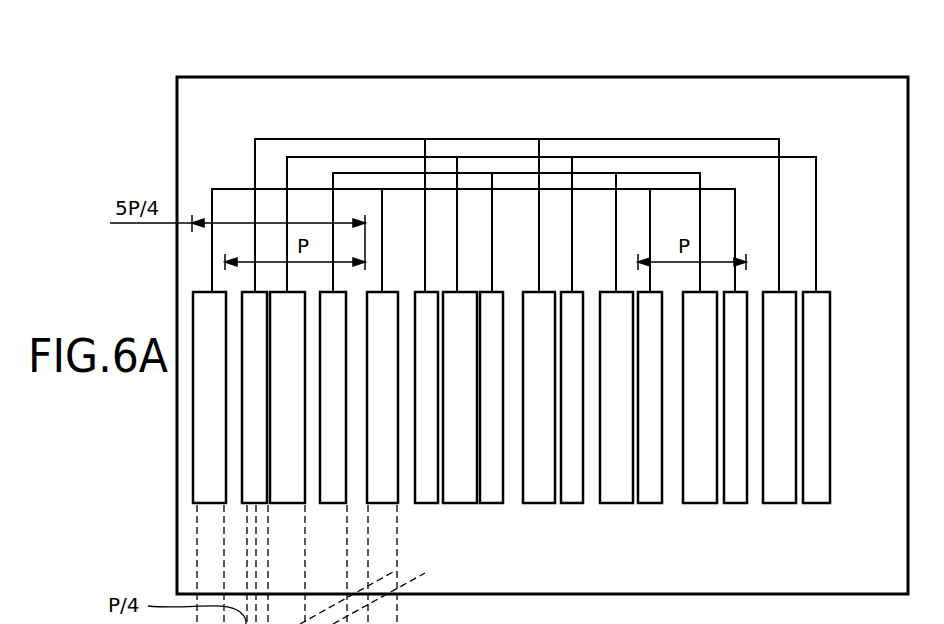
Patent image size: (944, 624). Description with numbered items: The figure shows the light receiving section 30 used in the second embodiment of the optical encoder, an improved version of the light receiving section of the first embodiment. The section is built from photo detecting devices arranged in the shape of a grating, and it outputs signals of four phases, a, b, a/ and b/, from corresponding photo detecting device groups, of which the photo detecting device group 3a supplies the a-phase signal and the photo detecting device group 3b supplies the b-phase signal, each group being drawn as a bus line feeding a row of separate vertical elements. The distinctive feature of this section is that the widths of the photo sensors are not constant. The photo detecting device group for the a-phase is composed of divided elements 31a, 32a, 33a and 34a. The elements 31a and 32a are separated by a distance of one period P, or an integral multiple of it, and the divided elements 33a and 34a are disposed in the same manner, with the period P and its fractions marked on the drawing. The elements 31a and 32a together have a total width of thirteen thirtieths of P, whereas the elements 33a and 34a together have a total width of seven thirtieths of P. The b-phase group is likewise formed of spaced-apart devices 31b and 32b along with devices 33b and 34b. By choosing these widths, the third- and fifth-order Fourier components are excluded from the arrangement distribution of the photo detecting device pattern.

The light receiving section 30 is at (539, 77).
The photo detecting device group 3a is at (227, 189).
The photo detecting device group 3b is at (413, 173).
The divided element 31a is at (216, 505).
The photo detecting device 31b is at (335, 505).
The divided element 32a is at (385, 505).
The photo detecting device 32b is at (494, 505).
The third B-phase electrode 33b is at (617, 505).
The divided element 33a is at (651, 505).
The fourth B-phase electrode 34b is at (702, 505).
The divided element 34a is at (737, 505).